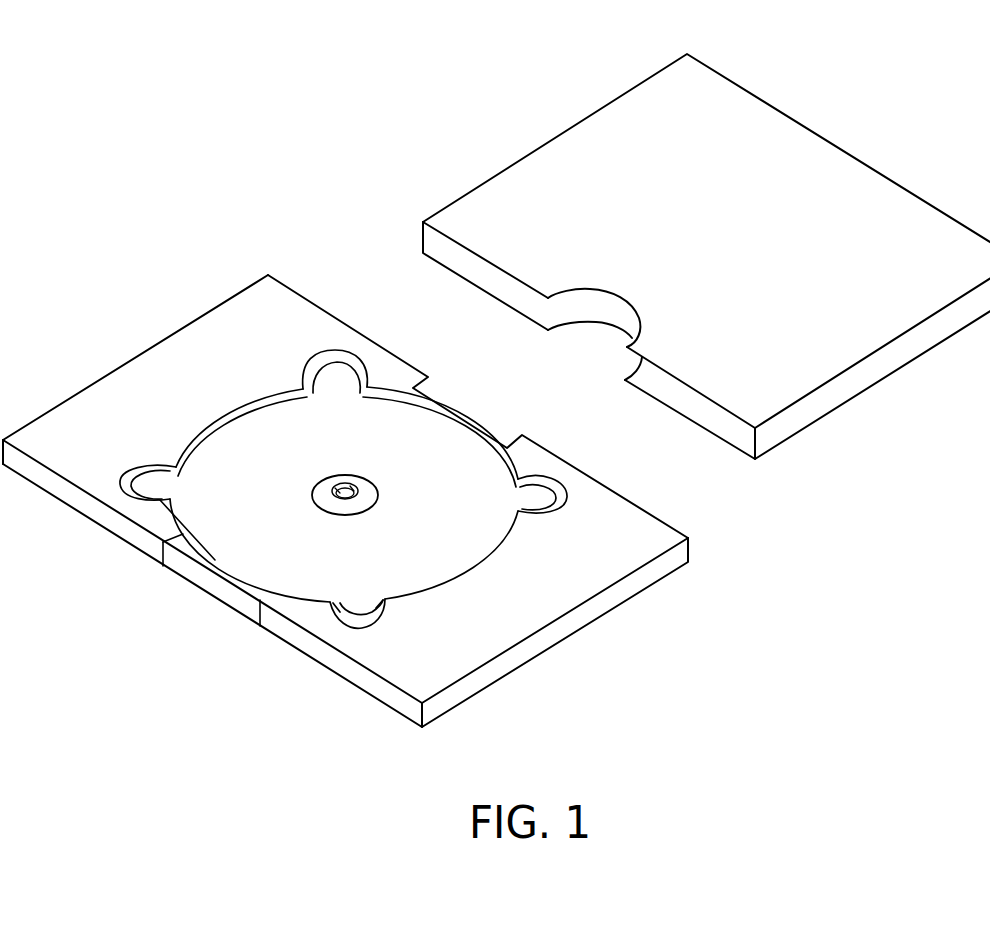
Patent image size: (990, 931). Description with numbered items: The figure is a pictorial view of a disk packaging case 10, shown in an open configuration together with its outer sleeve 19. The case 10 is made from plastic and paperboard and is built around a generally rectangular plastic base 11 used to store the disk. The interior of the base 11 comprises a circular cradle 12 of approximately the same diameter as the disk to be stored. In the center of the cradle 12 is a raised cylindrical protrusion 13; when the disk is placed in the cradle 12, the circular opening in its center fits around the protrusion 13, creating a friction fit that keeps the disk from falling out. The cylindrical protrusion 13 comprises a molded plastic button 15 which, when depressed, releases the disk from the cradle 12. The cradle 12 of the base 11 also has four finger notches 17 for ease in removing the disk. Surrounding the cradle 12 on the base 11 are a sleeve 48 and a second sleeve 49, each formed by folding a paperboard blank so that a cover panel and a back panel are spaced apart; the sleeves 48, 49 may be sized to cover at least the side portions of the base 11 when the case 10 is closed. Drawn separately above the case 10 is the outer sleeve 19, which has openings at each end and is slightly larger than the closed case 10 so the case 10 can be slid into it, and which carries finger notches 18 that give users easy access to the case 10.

The case 10 is at (135, 280).
The plastic base 11 is at (250, 587).
The circular cradle 12 is at (226, 508).
The raised cylindrical protrusion 13 is at (343, 503).
The molded plastic button 15 is at (357, 484).
The finger notches 17 is at (330, 373).
The finger notches 18 is at (610, 311).
The outer sleeve 19 is at (592, 165).
The sleeve 48 is at (506, 597).
The second sleeve 49 is at (132, 408).